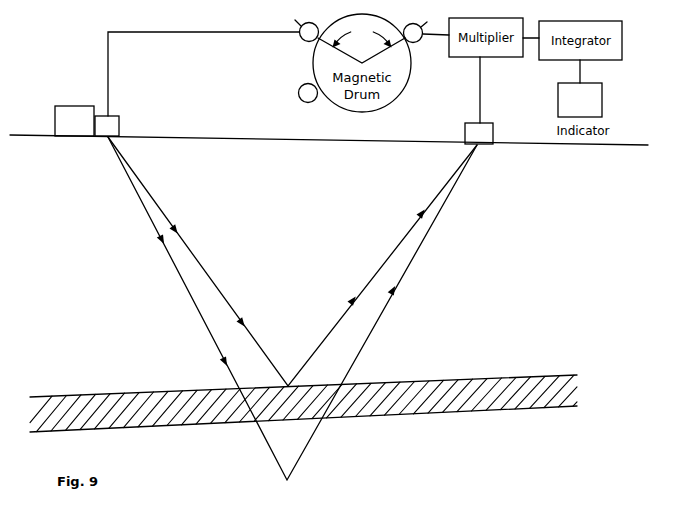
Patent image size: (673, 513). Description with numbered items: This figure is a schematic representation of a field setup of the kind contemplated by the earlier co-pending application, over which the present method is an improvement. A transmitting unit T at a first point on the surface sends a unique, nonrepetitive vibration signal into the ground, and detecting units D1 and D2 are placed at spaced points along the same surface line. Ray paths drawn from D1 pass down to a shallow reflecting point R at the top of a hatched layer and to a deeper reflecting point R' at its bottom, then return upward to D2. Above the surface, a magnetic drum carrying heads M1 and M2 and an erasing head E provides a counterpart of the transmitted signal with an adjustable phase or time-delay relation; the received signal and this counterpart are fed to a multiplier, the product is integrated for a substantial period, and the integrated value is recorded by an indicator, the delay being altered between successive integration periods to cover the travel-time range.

The transmitter T is at (74, 121).
The first detector D1 is at (107, 126).
The second detector D2 is at (479, 133).
The first magnetic head M1 is at (307, 31).
The second magnetic head M2 is at (416, 32).
The erase head E is at (308, 93).
The reflection point on layer top R is at (292, 261).
The reflection point on layer bottom R' is at (292, 308).